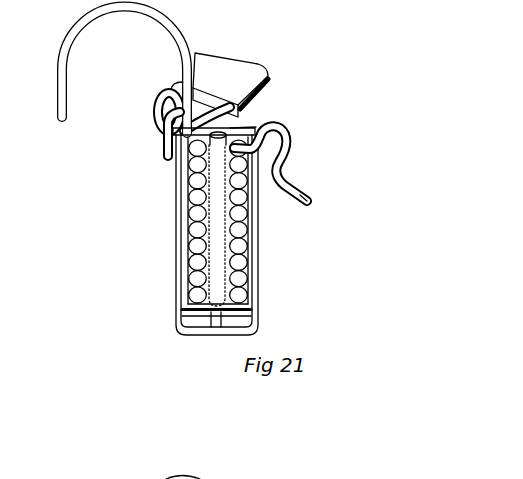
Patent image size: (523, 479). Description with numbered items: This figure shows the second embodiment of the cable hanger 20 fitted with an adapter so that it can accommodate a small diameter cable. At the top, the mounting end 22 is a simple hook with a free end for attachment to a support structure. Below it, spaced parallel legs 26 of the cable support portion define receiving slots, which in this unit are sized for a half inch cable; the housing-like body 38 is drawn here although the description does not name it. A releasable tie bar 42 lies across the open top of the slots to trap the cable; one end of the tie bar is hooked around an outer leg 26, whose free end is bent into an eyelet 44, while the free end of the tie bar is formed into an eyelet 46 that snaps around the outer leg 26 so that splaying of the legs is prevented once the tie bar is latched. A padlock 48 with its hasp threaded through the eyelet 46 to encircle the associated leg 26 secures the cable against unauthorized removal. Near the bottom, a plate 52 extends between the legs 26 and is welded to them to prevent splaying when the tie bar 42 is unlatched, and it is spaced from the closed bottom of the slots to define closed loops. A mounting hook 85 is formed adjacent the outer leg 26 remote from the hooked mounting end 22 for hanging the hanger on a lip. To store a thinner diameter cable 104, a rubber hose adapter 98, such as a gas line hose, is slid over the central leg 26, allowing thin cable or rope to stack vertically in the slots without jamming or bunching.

The cable hanger 20 is at (118, 178).
The mounting end 22 is at (88, 54).
The legs 26 is at (178, 257).
The housing 38 is at (259, 239).
The tie bar 42 is at (236, 129).
The eyelet 44 is at (294, 140).
The eyelet 46 is at (167, 137).
The padlock 48 is at (218, 63).
The plate 52 is at (184, 313).
The mounting hook 85 is at (297, 192).
The rubber hose adapter 98 is at (226, 132).
The thinner diameter cable 104 is at (186, 214).